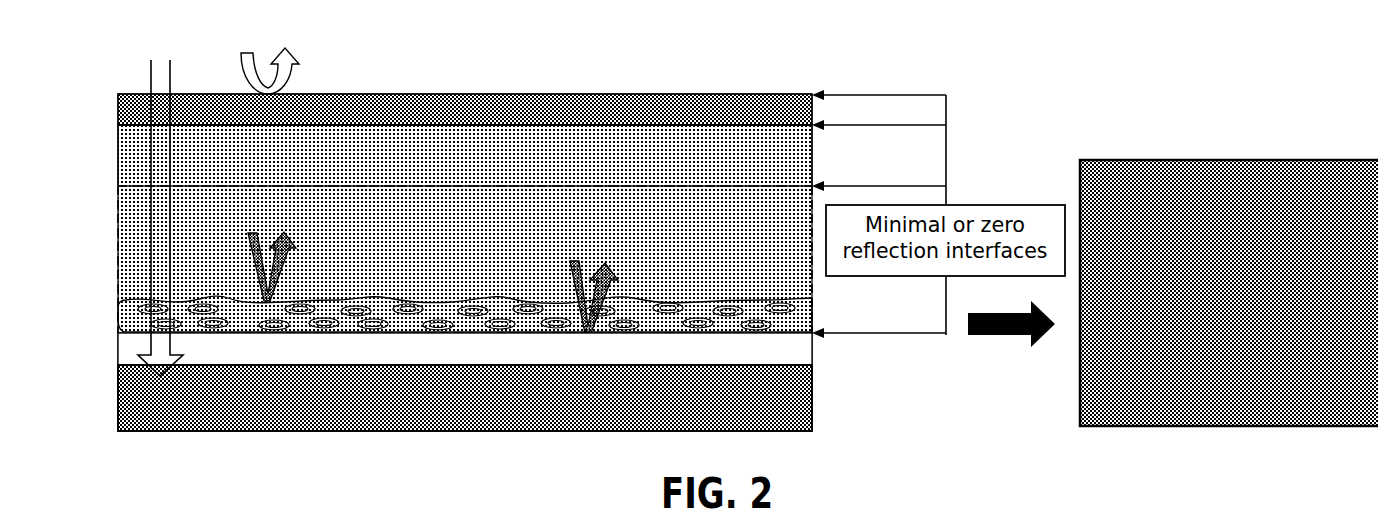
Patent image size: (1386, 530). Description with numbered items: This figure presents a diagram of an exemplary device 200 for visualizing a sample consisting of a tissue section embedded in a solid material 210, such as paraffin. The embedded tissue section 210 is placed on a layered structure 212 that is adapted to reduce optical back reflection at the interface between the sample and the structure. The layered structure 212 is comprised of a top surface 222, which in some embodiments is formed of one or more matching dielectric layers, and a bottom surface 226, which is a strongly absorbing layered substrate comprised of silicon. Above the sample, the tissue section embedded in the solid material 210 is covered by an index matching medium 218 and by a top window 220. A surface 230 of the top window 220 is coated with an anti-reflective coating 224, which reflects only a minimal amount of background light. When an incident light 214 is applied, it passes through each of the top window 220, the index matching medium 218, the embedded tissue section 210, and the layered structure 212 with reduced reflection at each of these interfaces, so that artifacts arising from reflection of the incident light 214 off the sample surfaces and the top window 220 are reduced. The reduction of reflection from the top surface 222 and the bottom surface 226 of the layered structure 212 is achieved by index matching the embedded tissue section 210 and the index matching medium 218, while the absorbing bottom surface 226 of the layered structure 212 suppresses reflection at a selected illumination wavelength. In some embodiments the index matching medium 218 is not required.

The device 200 is at (490, 459).
The tissue section embedded in the solid material 210 is at (96, 308).
The layered structure 212 is at (86, 359).
The incident light 214 is at (118, 60).
The index matching medium 218 is at (780, 265).
The top window 220 is at (760, 153).
The top surface 222 is at (826, 345).
The anti-reflective coating 224 is at (616, 100).
The bottom surface 226 is at (826, 383).
The surface of the top window 230 is at (726, 112).